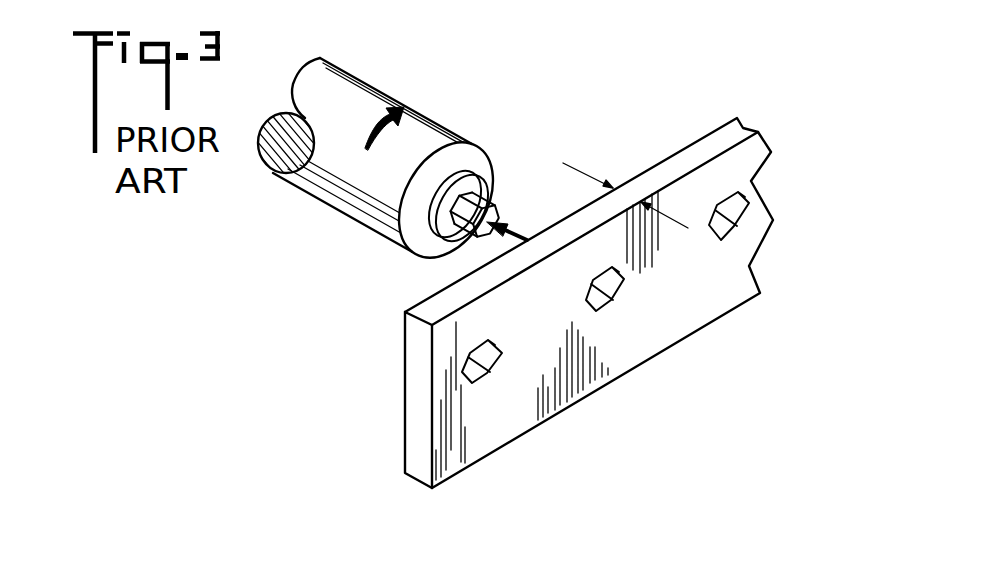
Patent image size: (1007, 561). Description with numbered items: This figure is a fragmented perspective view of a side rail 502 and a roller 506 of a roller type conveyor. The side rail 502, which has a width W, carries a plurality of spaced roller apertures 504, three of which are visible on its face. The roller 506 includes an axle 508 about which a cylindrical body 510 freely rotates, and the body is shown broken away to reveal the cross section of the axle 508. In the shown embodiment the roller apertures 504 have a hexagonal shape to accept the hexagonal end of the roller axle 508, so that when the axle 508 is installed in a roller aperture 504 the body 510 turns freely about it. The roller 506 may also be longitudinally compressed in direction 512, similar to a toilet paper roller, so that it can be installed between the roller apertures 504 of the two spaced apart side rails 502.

The side rail 502 is at (710, 143).
The roller aperture 504 is at (718, 222).
The roller 506 is at (431, 87).
The axle 508 is at (466, 236).
The cylindrical body 510 is at (355, 193).
The direction 512 is at (513, 227).
The width W is at (625, 197).